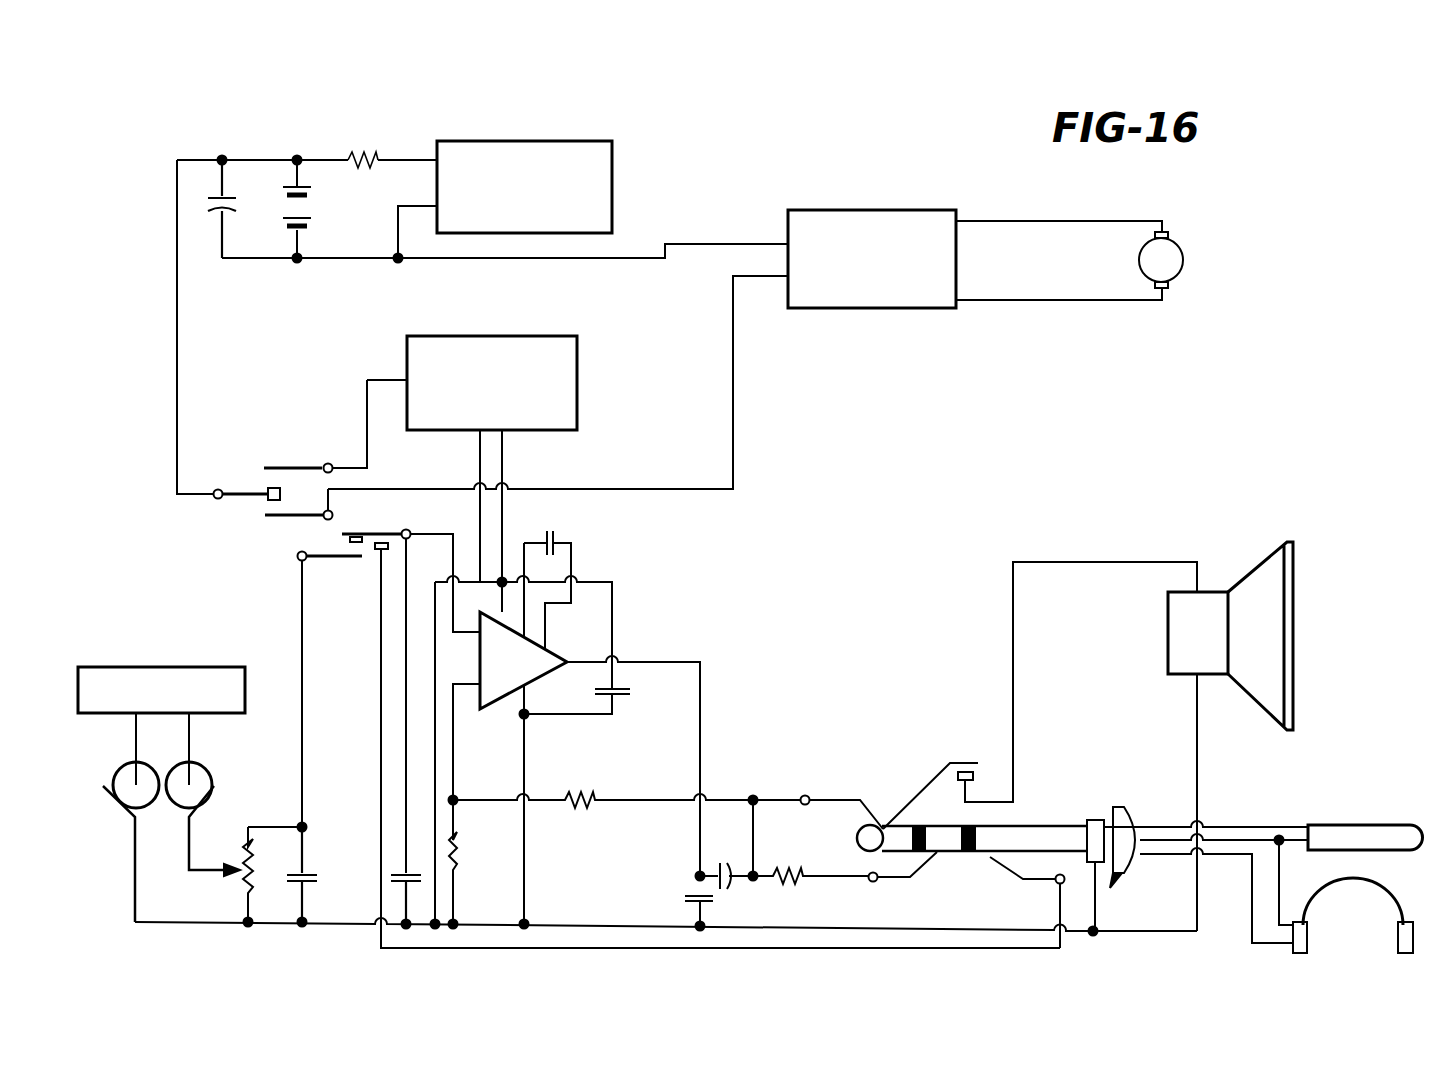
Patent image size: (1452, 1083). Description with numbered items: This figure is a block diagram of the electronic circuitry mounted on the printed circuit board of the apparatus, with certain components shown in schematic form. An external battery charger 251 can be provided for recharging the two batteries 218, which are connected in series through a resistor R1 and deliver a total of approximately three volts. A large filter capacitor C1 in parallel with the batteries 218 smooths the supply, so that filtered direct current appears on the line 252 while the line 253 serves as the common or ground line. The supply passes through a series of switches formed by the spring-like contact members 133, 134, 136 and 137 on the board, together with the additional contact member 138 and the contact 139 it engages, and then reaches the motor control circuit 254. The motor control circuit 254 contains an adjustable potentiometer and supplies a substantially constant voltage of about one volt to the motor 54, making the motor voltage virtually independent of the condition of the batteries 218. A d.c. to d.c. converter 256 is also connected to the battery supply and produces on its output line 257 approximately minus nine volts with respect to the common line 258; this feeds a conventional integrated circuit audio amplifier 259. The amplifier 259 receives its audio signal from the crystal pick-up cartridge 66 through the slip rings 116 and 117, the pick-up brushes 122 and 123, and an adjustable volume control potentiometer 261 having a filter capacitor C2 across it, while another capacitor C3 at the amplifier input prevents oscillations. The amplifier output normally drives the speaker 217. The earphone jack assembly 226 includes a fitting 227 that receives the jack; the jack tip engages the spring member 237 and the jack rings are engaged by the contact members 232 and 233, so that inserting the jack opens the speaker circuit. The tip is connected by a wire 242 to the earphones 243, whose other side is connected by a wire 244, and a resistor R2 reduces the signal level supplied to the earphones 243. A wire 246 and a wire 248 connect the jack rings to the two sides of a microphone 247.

The resistor R1 is at (382, 156).
The filter capacitor C1 is at (229, 209).
The batteries 218 is at (313, 194).
The external battery charger 251 is at (580, 144).
The line 252 is at (510, 262).
The common or ground line 253 is at (175, 368).
The motor control circuit 254 is at (893, 190).
The motor 54 is at (1178, 250).
The d.c. to d.c. converter 256 is at (577, 362).
The output line 257 is at (476, 462).
The common line 258 is at (505, 480).
The contact member 133 is at (306, 467).
The contact member 134 is at (248, 503).
The contact member 136 is at (312, 516).
The contact member 137 is at (344, 557).
The contact member 138 is at (372, 533).
The contact 139 is at (378, 550).
The integrated circuit audio amplifier 259 is at (499, 704).
The resistor R2 is at (802, 854).
The filter capacitor C2 is at (332, 852).
The capacitor C3 is at (432, 852).
The cartridge 66 is at (191, 666).
The conducting ring 116 is at (208, 772).
The conducting ring 117 is at (124, 770).
The spring-like wire 122 is at (216, 790).
The spring-like wire 123 is at (112, 806).
The adjustable potentiometer 261 is at (235, 884).
The spring member 237 is at (890, 810).
The contact member 233 is at (937, 868).
The contact member 232 is at (1000, 871).
The speaker 217 is at (1280, 610).
The fitting 227 is at (1094, 818).
The wire 244 is at (1160, 834).
The earphone jack assembly 226 is at (1114, 879).
The wire 246 is at (1250, 826).
The microphone 247 is at (1364, 824).
The wire 248 is at (1290, 844).
The wire 242 is at (1250, 930).
The earphones 243 is at (1398, 940).